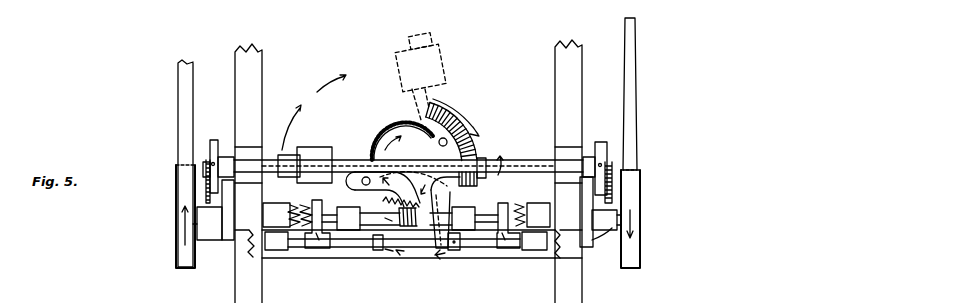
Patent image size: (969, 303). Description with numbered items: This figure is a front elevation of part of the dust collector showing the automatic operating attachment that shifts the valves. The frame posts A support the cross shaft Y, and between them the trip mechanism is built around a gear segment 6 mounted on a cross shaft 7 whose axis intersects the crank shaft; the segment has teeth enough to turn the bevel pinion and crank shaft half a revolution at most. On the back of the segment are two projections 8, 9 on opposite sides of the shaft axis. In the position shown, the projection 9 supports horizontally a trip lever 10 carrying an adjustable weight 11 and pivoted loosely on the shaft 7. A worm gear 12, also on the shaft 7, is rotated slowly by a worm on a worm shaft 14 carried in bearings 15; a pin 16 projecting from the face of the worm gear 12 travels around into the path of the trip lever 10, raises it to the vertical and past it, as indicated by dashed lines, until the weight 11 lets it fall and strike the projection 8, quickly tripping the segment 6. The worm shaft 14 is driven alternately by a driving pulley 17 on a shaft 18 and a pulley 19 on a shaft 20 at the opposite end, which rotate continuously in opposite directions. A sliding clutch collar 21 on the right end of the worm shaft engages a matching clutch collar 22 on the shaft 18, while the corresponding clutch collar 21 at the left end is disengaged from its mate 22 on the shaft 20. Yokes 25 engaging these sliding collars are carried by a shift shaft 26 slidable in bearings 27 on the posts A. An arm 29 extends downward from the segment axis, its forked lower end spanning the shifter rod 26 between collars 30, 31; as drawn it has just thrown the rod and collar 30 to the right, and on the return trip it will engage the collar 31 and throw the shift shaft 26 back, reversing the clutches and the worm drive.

The gear segment 6 is at (440, 122).
The cross shaft 7 is at (403, 210).
The projection 8 is at (437, 141).
The projection 9 is at (361, 181).
The trip lever 10 is at (342, 158).
The adjustable weight 11 is at (320, 147).
The worm gear 12 is at (395, 132).
The worm shaft 14 is at (386, 218).
The bearings 15 is at (410, 218).
The pin 16 is at (412, 140).
The driving pulley 17 is at (642, 247).
The shaft 18 is at (618, 226).
The pulley 19 is at (177, 238).
The shaft 20 is at (198, 228).
The sliding clutch collar 21 is at (313, 207).
The clutch collar 22 is at (279, 210).
The yoke 25 is at (345, 193).
The shift shaft 26 is at (345, 249).
The bearings 27 is at (406, 241).
The arm 29 is at (418, 216).
The collar 30 is at (456, 252).
The collar 31 is at (376, 251).
The posts A is at (257, 48).
The shaft Y is at (526, 162).